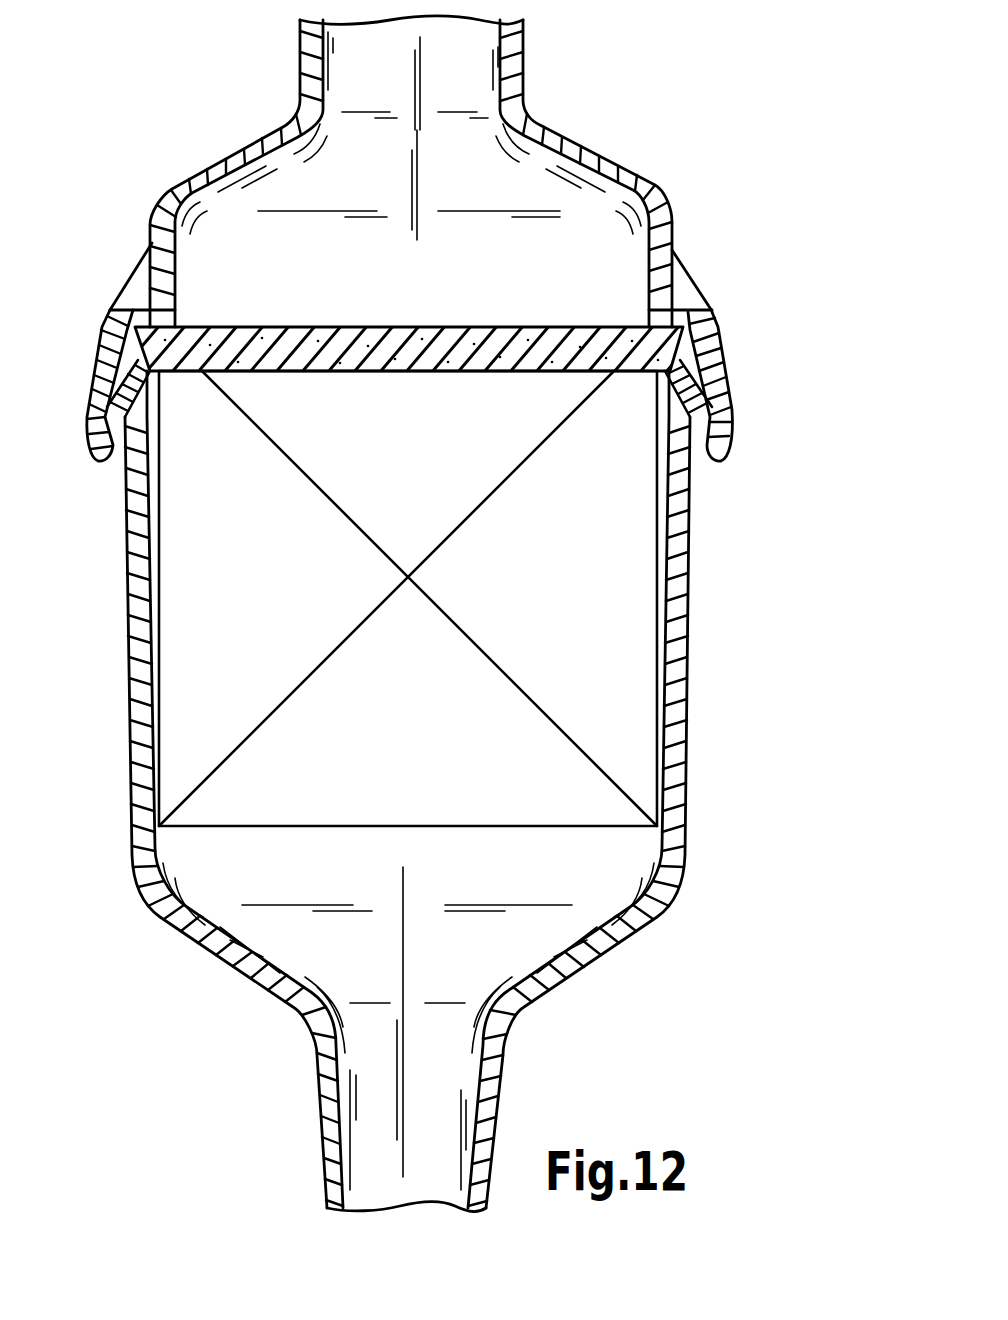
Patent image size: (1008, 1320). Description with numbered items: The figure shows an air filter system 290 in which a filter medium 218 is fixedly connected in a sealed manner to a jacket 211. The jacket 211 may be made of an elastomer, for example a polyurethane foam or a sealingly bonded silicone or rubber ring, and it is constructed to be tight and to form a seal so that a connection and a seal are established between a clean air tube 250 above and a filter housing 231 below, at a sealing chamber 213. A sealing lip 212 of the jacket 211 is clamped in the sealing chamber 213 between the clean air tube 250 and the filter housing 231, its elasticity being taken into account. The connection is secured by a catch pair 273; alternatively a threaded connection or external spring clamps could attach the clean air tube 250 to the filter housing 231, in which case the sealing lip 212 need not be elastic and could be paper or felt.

The air filter system 290 is at (718, 227).
The clean air tube 250 is at (540, 127).
The jacket 211 is at (447, 350).
The sealing lip 212 is at (122, 318).
The sealing chamber 213 is at (701, 322).
The filter medium 218 is at (632, 577).
The filter housing 231 is at (138, 693).
The catch pair 273 is at (76, 391).